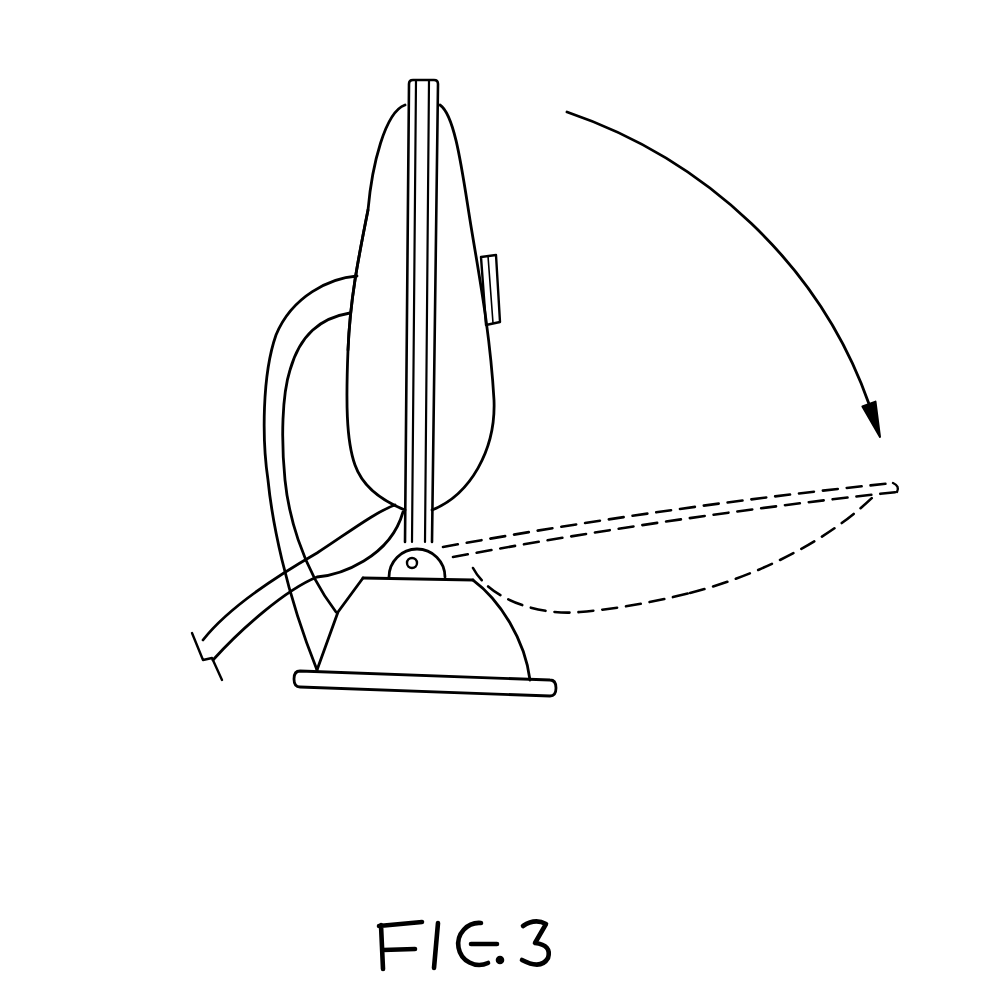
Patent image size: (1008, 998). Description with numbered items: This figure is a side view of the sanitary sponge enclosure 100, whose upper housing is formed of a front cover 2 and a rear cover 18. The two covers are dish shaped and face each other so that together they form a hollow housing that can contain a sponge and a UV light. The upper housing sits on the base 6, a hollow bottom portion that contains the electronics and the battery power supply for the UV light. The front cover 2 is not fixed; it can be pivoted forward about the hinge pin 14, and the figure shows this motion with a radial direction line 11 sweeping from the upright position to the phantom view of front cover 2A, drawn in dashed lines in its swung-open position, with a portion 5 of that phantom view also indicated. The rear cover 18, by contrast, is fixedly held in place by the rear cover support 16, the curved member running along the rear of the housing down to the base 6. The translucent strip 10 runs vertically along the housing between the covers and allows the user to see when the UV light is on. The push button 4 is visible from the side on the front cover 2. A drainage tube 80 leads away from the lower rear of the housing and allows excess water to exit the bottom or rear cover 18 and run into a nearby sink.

The sanitary sponge enclosure 100 is at (198, 708).
The translucent side strip 10 is at (423, 77).
The front cover 2 is at (457, 217).
The rear cover 18 is at (380, 233).
The push button 4 is at (500, 300).
The rear cover support 16 is at (273, 380).
The drainage tube 80 is at (238, 602).
The hinge pin 14 is at (411, 568).
The base 6 is at (428, 642).
The radial direction line 11 is at (713, 190).
The phantom view of front cover 2A is at (600, 578).
The rotated body portion 5 is at (783, 543).